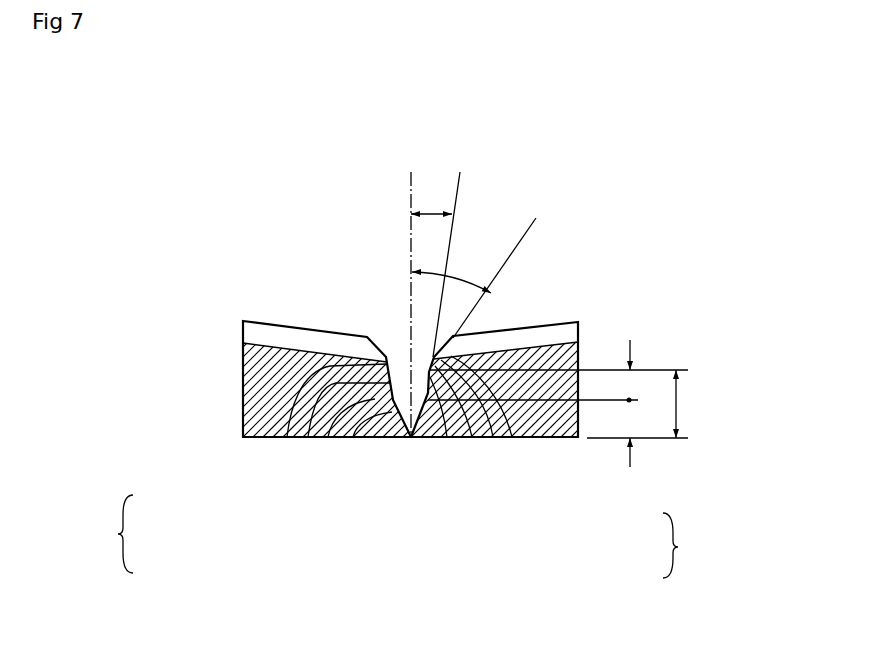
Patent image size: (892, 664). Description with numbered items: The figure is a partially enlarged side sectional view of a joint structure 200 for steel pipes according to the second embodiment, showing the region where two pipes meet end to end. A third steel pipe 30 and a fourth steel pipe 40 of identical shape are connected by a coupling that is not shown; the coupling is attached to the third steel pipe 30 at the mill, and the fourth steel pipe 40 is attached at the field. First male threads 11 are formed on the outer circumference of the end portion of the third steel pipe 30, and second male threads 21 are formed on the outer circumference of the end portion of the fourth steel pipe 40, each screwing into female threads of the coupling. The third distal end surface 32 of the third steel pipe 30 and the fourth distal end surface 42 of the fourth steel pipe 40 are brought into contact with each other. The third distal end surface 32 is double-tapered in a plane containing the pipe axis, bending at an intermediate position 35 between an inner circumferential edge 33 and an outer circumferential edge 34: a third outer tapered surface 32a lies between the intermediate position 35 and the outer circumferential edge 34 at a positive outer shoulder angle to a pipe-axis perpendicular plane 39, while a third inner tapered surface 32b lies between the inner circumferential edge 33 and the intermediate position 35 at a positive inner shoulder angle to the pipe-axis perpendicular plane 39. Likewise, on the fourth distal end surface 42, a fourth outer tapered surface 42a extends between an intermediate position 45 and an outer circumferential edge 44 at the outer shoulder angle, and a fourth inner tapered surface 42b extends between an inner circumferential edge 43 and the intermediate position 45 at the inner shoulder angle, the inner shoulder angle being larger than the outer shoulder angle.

The joint structure 200 is at (149, 197).
The first male threads 11 is at (262, 333).
The second male threads 21 is at (532, 337).
The third steel pipe 30 is at (243, 388).
The fourth steel pipe 40 is at (579, 346).
The pipe-axis perpendicular plane 39 is at (410, 236).
The third distal end surface 32 is at (109, 534).
The third outer tapered surface 32a is at (308, 440).
The third inner tapered surface 32b is at (353, 440).
The inner circumferential edge 33 is at (408, 439).
The outer circumferential edge 34 is at (287, 440).
The intermediate position 35 is at (328, 440).
The fourth distal end surface 42 is at (685, 545).
The fourth outer tapered surface 42a is at (493, 440).
The fourth inner tapered surface 42b is at (448, 440).
The inner circumferential edge 43 is at (410, 440).
The outer circumferential edge 44 is at (512, 440).
The intermediate position 45 is at (472, 440).